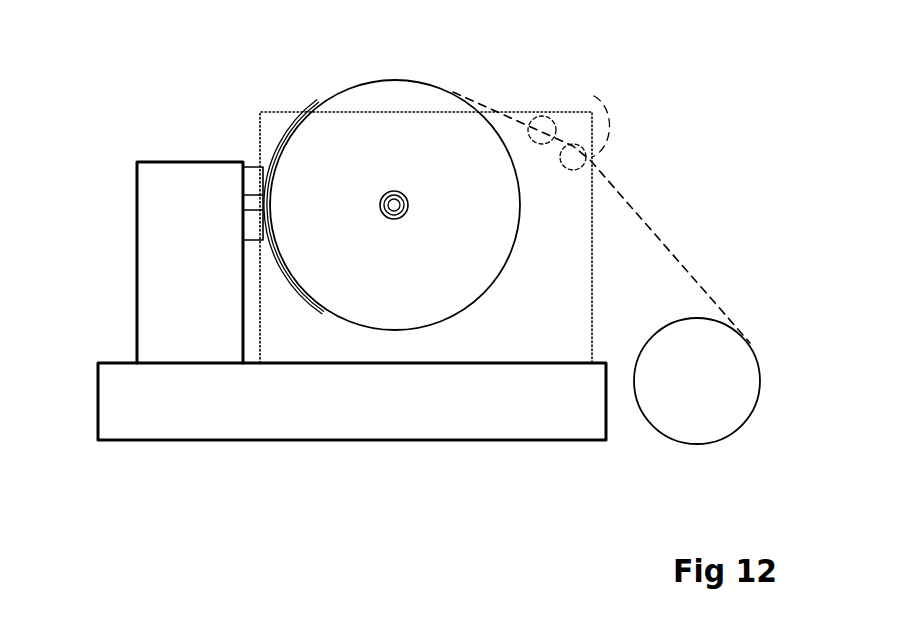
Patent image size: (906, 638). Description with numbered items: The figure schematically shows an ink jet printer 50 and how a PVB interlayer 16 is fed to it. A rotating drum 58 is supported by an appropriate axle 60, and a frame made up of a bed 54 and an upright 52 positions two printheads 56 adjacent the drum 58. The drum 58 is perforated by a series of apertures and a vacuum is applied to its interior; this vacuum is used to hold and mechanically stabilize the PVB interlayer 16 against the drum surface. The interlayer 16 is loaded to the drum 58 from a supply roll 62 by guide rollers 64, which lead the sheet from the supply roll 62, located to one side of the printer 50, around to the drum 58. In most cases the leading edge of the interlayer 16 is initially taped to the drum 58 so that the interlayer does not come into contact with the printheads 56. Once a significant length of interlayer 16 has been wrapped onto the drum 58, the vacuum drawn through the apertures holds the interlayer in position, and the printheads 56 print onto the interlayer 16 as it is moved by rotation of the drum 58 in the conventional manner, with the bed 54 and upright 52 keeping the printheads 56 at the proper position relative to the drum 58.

The PVB interlayer 16 is at (317, 100).
The ink jet printer 50 is at (131, 482).
The upright 52 is at (165, 243).
The bed 54 is at (290, 417).
The printheads 56 is at (250, 227).
The rotating drum 58 is at (441, 90).
The axle 60 is at (410, 203).
The roller 62 is at (700, 420).
The guide rollers 64 is at (555, 117).